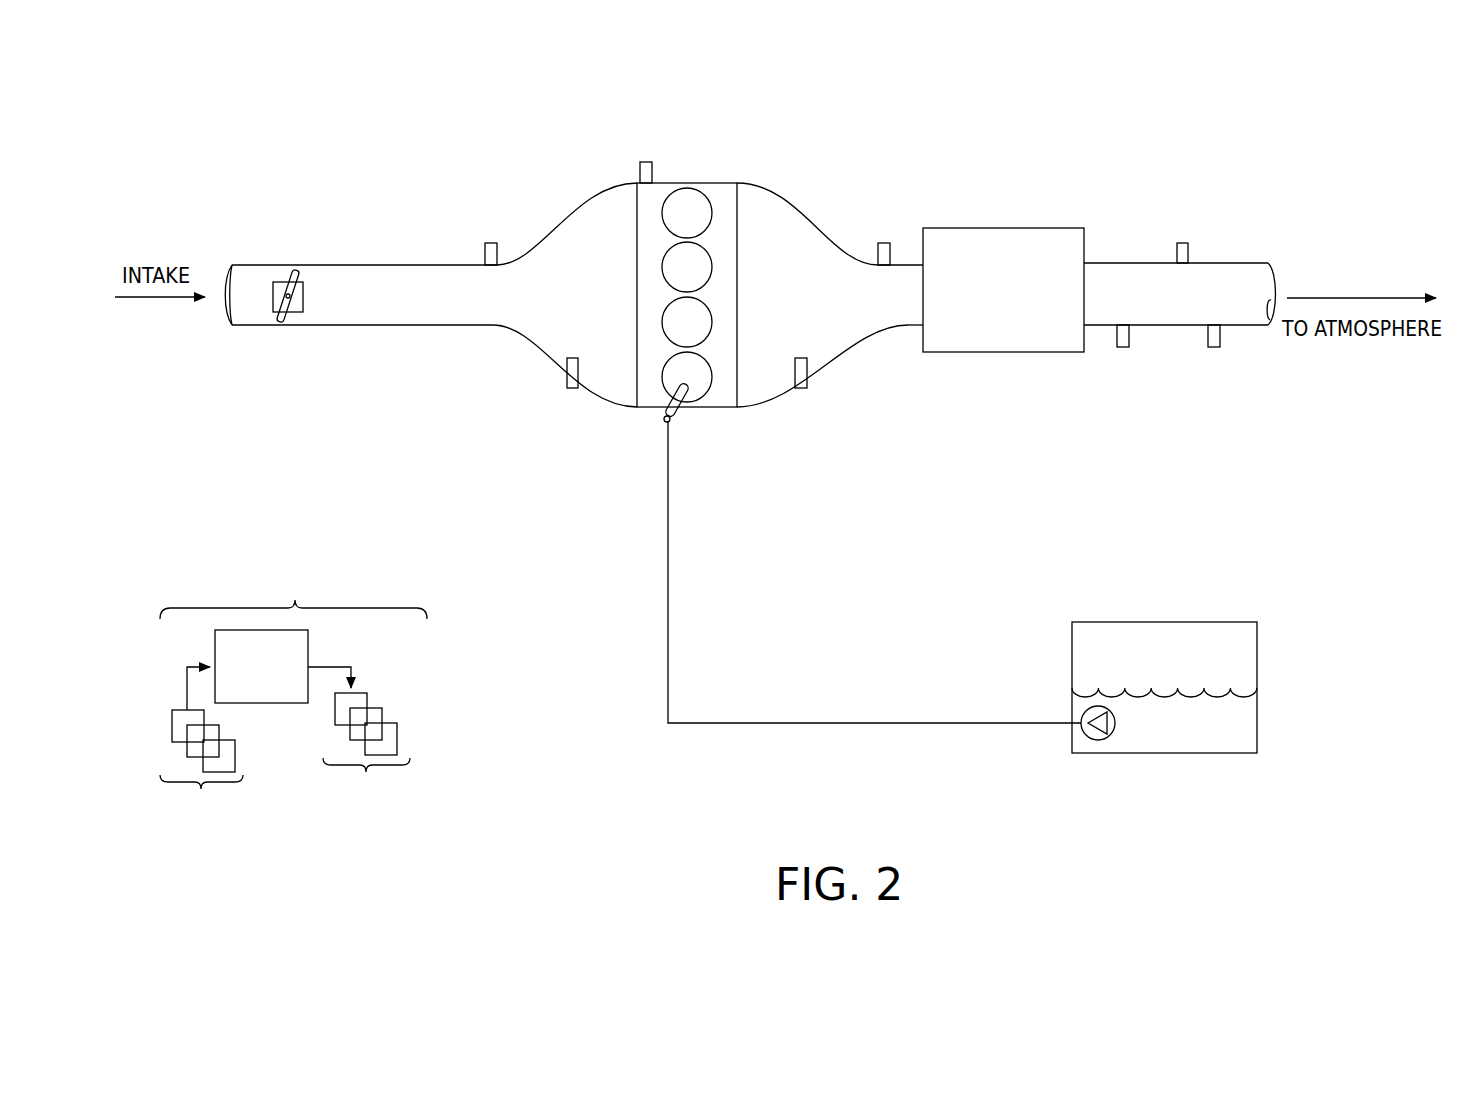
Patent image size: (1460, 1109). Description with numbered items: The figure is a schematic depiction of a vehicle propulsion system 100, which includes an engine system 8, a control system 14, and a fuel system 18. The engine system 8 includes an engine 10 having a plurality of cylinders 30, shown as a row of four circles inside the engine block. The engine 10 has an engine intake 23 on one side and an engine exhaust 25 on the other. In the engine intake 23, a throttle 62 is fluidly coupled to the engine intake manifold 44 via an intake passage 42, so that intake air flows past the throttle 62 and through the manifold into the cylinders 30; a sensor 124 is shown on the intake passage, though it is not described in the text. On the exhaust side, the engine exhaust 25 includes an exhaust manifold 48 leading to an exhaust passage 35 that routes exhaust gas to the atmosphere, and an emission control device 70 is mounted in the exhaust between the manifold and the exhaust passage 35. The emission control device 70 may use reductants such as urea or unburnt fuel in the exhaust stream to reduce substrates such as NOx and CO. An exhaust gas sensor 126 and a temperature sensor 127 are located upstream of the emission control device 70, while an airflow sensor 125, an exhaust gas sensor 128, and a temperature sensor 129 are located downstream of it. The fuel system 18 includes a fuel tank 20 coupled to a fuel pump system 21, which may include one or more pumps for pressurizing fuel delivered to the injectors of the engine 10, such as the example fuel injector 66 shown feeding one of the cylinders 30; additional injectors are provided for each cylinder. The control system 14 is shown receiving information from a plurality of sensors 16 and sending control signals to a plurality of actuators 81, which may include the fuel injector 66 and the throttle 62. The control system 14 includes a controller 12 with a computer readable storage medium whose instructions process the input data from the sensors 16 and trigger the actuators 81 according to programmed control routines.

The vehicle propulsion system 100 is at (321, 185).
The engine system 8 is at (865, 147).
The engine intake 23 is at (433, 245).
The intake passage 42 is at (338, 326).
The throttle 62 is at (312, 300).
The intake sensor 124 is at (493, 262).
The engine intake manifold 44 is at (565, 295).
The airflow sensor 125 is at (567, 368).
The engine 10 is at (737, 276).
The cylinders 30 is at (707, 208).
The exhaust gas sensor 128 is at (662, 163).
The fuel injector 66 is at (684, 411).
The engine exhaust 25 is at (1096, 200).
The exhaust manifold 48 is at (822, 295).
The exhaust gas sensor 126 is at (808, 370).
The temperature sensor 127 is at (878, 255).
The emission control device 70 is at (1003, 290).
The exhaust passage 35 is at (1222, 263).
The temperature sensor 129 is at (1215, 348).
The control system 14 is at (293, 695).
The controller 12 is at (261, 666).
The sensors 16 is at (201, 752).
The actuators 81 is at (359, 744).
The fuel system 18 is at (1176, 800).
The fuel tank 20 is at (1257, 733).
The fuel pump system 21 is at (1111, 712).